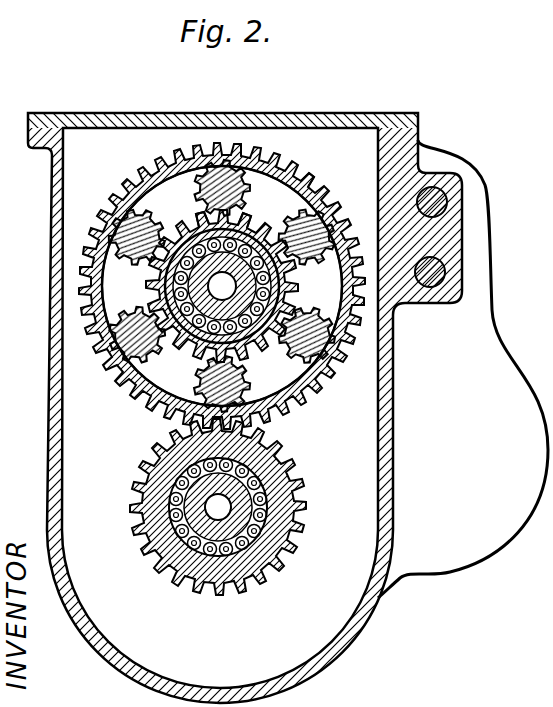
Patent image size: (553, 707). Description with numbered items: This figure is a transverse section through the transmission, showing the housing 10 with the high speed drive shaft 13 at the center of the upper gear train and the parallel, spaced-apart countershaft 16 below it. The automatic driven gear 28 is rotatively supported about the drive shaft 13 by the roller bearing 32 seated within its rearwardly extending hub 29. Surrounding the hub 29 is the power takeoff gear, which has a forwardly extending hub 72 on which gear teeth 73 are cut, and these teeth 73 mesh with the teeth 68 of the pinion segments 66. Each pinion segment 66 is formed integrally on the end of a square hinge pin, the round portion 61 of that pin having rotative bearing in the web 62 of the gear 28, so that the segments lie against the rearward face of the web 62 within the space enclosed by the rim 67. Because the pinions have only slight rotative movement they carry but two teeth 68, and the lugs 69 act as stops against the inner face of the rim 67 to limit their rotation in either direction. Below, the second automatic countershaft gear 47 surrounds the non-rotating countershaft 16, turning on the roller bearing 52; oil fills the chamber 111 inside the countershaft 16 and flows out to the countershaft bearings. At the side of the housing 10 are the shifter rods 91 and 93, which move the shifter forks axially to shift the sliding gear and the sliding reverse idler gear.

The housing 10 is at (52, 178).
The automatic driven gear 28 is at (313, 178).
The rim 67 is at (318, 192).
The pinion segment 66 is at (335, 235).
The high speed drive shaft 13 is at (300, 282).
The roller bearing 32 is at (276, 350).
The hub 29 is at (195, 225).
The gear teeth 73 is at (180, 225).
The forwardly extending hub 72 is at (256, 223).
The lugs 69 is at (246, 186).
The teeth 68 is at (137, 260).
The web 62 is at (99, 304).
The round portion 61 is at (195, 377).
The rod 91 is at (443, 207).
The rod 93 is at (433, 272).
The second automatic countershaft gear 47 is at (297, 470).
The countershaft 16 is at (262, 535).
The chamber 111 is at (218, 508).
The roller bearing 52 is at (238, 525).